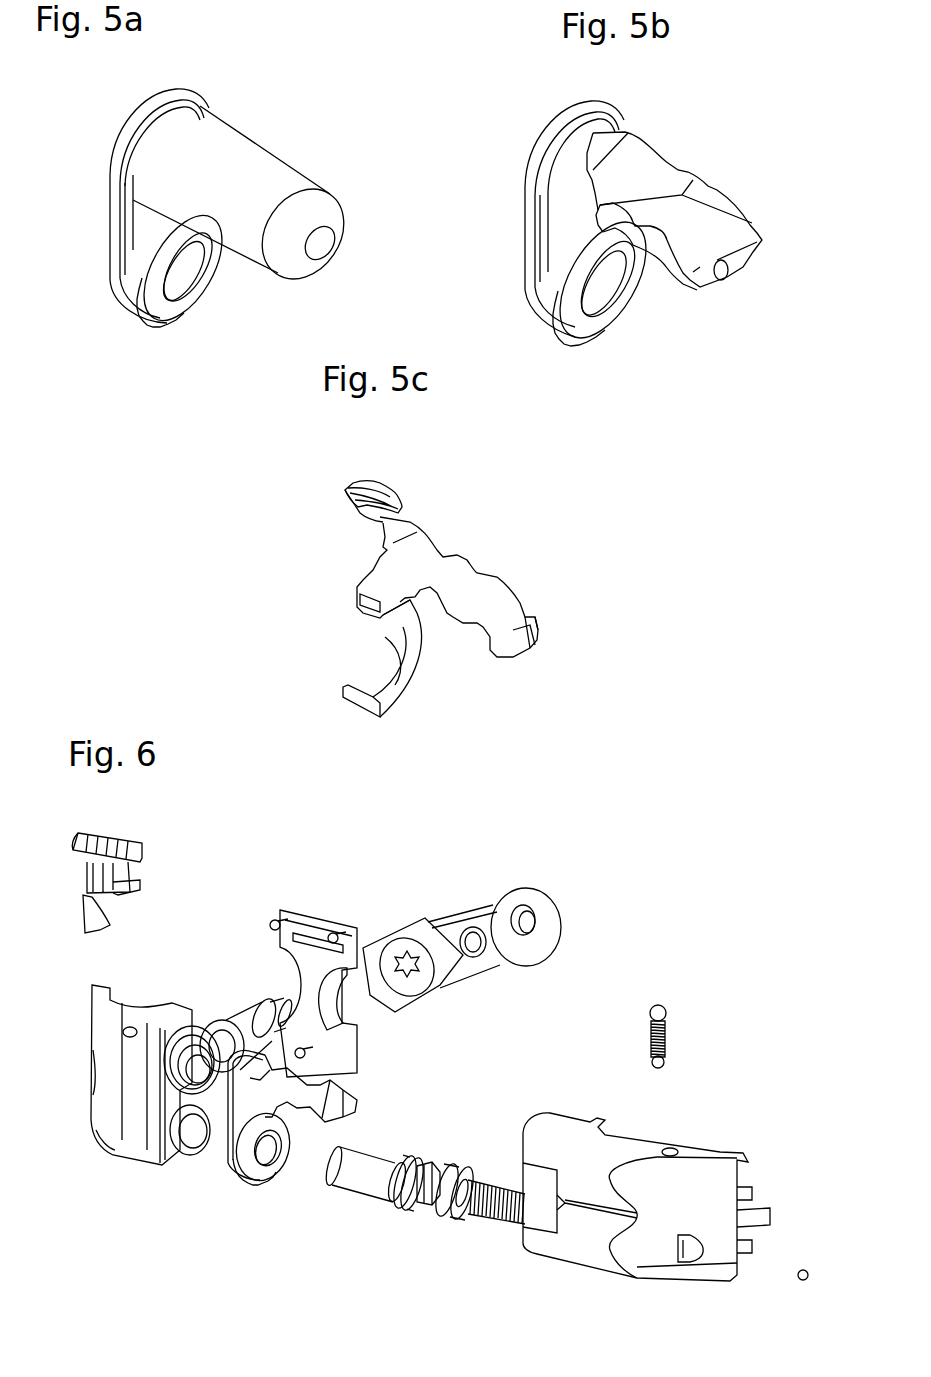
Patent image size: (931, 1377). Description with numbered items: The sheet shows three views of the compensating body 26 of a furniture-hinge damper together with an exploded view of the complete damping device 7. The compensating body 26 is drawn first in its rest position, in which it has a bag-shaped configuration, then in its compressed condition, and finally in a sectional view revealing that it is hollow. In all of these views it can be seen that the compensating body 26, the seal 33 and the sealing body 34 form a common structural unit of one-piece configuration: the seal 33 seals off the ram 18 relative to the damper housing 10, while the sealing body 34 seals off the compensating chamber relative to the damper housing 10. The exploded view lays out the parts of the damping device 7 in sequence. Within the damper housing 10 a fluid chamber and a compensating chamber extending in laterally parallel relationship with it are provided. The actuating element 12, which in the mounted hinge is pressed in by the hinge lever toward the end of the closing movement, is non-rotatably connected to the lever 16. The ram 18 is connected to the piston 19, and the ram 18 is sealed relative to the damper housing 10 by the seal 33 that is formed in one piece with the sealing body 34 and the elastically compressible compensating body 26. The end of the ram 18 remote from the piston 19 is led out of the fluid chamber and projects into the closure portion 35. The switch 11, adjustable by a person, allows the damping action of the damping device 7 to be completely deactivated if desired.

In FIG. 6, the damping device 7 is at (710, 1110).
In FIG. 6, the damper housing 10 is at (567, 1247).
In FIG. 6, the switch 11 is at (120, 838).
In FIG. 6, the actuating element 12 is at (495, 918).
In FIG. 6, the lever 16 is at (217, 1027).
In FIG. 6, the ram 18 is at (362, 1193).
In FIG. 6, the piston 19 is at (443, 1212).
In FIG. 5A, the compensating body 26 is at (267, 183).
In FIG. 5B, the compensating body 26 is at (680, 193).
In FIG. 5C, the compensating body 26 is at (493, 593).
In FIG. 6, the compensating body 26 is at (327, 1095).
In FIG. 5A, the seal 33 is at (165, 310).
In FIG. 5B, the seal 33 is at (585, 323).
In FIG. 5C, the seal 33 is at (370, 703).
In FIG. 6, the seal 33 is at (247, 1172).
In FIG. 5A, the sealing body 34 is at (202, 102).
In FIG. 5B, the sealing body 34 is at (618, 110).
In FIG. 5C, the sealing body 34 is at (395, 495).
In FIG. 6, the sealing body 34 is at (262, 1047).
In FIG. 6, the closure portion 35 is at (132, 1145).